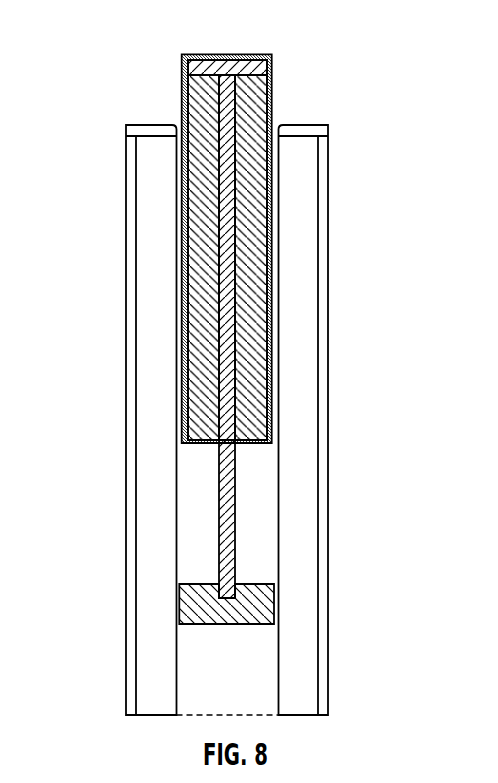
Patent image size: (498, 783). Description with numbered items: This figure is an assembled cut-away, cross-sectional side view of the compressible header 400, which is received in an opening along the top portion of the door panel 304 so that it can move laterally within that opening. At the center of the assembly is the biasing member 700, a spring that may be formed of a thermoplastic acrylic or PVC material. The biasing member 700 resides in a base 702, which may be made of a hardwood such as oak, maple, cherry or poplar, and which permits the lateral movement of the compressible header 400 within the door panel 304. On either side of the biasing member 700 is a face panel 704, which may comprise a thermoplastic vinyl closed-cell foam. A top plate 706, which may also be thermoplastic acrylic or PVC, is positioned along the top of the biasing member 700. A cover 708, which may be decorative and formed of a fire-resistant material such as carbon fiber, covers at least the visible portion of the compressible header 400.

The compressible header 400 is at (225, 335).
The door panel 304 is at (126, 217).
The biasing member 700 is at (228, 496).
The base 702 is at (185, 597).
The face panel 704 is at (250, 217).
The top plate 706 is at (242, 57).
The cover 708 is at (182, 101).